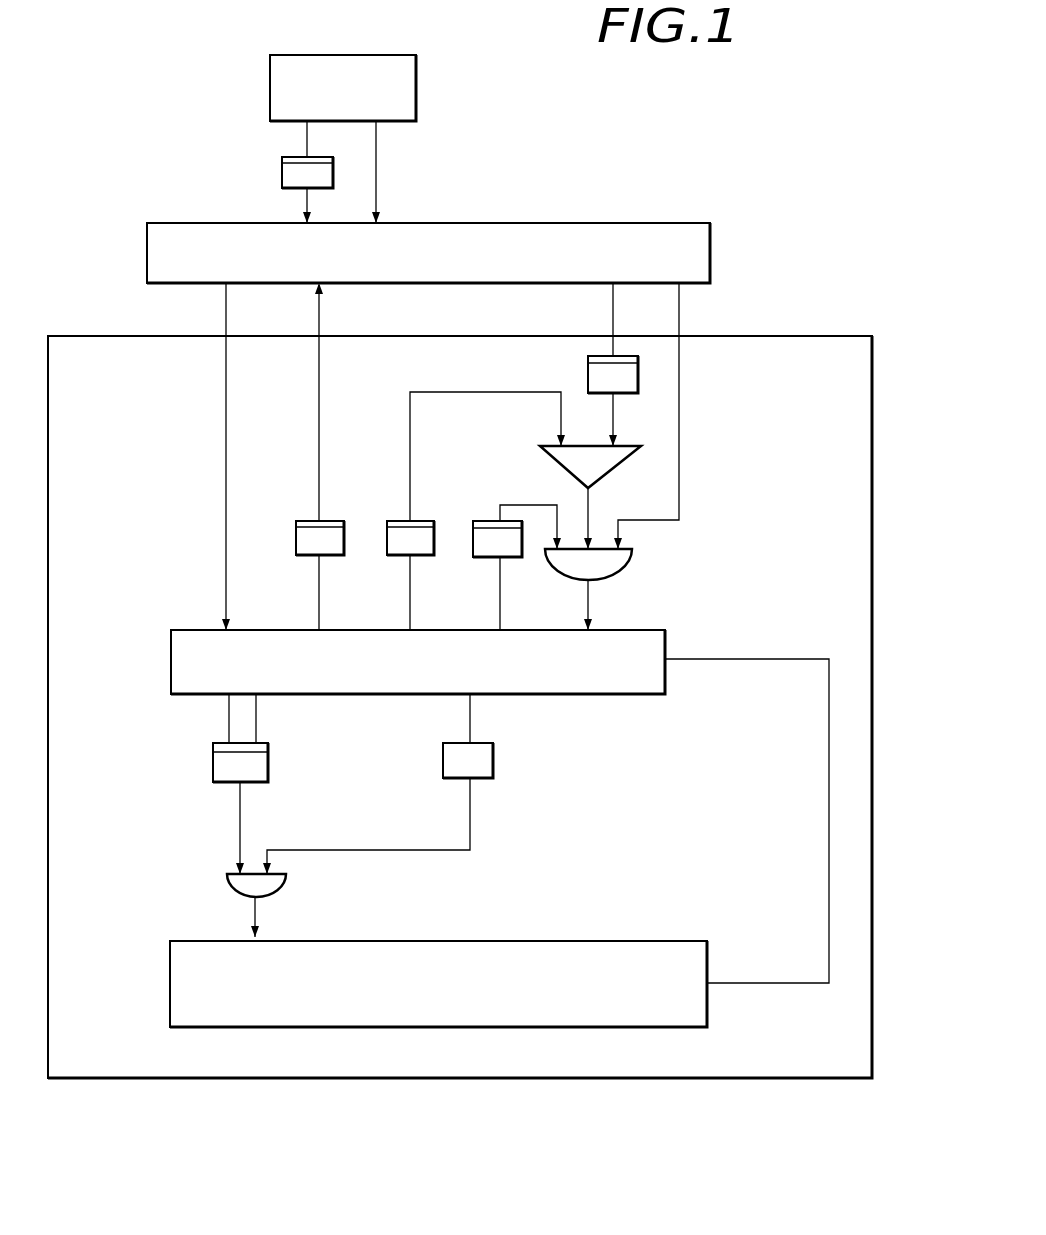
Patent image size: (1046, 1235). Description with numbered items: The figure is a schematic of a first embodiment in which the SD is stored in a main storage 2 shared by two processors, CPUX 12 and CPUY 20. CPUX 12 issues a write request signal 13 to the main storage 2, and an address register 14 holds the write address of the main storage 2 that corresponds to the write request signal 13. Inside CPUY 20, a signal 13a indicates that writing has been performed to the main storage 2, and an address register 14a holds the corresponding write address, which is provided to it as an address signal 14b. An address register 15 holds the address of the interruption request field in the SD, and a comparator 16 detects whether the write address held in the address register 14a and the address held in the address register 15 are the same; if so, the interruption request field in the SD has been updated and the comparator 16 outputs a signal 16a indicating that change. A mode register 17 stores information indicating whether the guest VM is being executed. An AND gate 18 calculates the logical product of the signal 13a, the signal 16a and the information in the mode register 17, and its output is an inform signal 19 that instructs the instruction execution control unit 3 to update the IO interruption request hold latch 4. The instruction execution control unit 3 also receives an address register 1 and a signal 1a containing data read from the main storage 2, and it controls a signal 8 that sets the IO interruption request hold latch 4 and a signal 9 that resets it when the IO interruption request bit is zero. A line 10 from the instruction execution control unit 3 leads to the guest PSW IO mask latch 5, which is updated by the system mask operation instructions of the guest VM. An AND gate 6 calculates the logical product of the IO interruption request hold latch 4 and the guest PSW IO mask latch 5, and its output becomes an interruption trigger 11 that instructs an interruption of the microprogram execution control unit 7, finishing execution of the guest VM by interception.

The address register 1 is at (300, 555).
The signal containing data read from the main storage 1a is at (226, 400).
The main storage 2 is at (711, 257).
The instruction execution control unit 3 is at (171, 655).
The IO interruption request hold latch 4 is at (270, 768).
The guest PSW IO mask latch 5 is at (495, 762).
The AND gate 6 is at (226, 883).
The microprogram execution control unit 7 is at (708, 950).
The signal 8 is at (227, 718).
The signal 9 is at (257, 720).
The mask signal line 10 is at (470, 722).
The interruption trigger 11 is at (255, 917).
The CPUX 12 is at (416, 88).
The write request signal 13 is at (376, 174).
The signal indicating that writing has been performed to the main storage 13a is at (679, 443).
The address register 14 is at (282, 173).
The address register 14a is at (588, 370).
The address signal 14b is at (613, 313).
The address register 15 is at (393, 555).
The comparator 16 is at (540, 452).
The signal 16a is at (588, 517).
The mode register 17 is at (483, 558).
The AND gate 18 is at (562, 570).
The inform signal 19 is at (588, 607).
The CPUY 20 is at (872, 478).